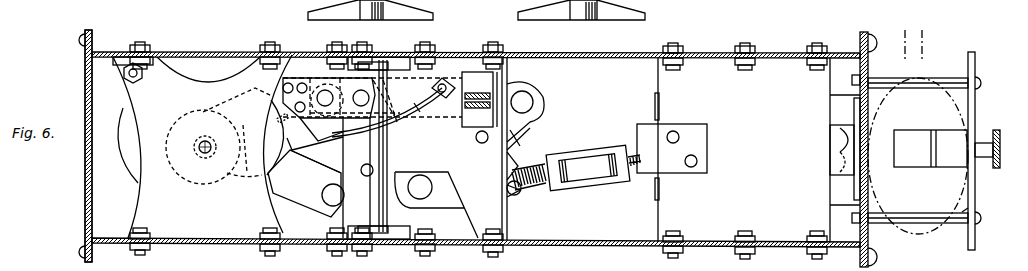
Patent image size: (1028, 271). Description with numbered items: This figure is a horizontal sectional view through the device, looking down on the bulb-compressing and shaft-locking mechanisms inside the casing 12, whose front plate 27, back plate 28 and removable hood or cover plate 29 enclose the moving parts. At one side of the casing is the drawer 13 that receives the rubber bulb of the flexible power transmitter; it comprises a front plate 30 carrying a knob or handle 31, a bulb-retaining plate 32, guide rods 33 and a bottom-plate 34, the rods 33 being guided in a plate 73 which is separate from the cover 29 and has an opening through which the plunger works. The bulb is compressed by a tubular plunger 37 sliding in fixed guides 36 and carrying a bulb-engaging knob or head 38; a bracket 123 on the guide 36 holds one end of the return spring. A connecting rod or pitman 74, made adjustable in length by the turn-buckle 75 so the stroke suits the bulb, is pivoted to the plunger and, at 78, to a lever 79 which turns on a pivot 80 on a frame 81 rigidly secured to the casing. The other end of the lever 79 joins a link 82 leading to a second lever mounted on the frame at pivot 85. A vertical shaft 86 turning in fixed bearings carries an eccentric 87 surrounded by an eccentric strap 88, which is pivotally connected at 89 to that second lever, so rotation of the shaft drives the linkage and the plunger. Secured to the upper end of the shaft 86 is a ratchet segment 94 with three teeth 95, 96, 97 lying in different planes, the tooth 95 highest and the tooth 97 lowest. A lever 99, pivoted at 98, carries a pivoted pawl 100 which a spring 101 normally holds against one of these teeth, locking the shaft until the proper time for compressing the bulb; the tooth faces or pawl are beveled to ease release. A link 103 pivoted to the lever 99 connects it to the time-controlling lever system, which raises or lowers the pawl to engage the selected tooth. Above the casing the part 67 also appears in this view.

The casing 12 is at (186, 60).
The drawer 13 is at (918, 88).
The front plate 27 is at (715, 44).
The back plate 28 is at (596, 249).
The hood or cover plate 29 is at (86, 185).
The front plate 30 is at (976, 118).
The knob or handle 31 is at (994, 142).
The bulb-retaining plate 32 is at (915, 140).
The guide rods 33 is at (918, 80).
The bottom-plate 34 is at (962, 209).
The fixed guides 36 is at (662, 89).
The plunger 37 is at (655, 108).
The bulb-engaging knob or head 38 is at (840, 150).
The top bracket 67 is at (428, 13).
The plate 73 is at (888, 64).
The connecting rod or pitman 74 is at (540, 187).
The turn-buckle 75 is at (596, 155).
The pivot 78 is at (426, 190).
The lever 79 is at (526, 139).
The pivot 80 is at (482, 143).
The frame 81 is at (495, 219).
The link 82 is at (540, 97).
The pivot 85 is at (363, 176).
The vertical shaft 86 is at (205, 139).
The eccentric 87 is at (128, 165).
The eccentric strap 88 is at (291, 200).
The pivot 89 is at (317, 178).
The ratchet segment 94 is at (244, 178).
The ratchet tooth 95 is at (268, 151).
The ratchet tooth 96 is at (270, 126).
The ratchet tooth 97 is at (268, 98).
The pivot 98 is at (377, 170).
The lever 99 is at (449, 113).
The pawl 100 is at (329, 122).
The spring 101 is at (393, 128).
The link 103 is at (503, 95).
The bracket 123 is at (646, 138).